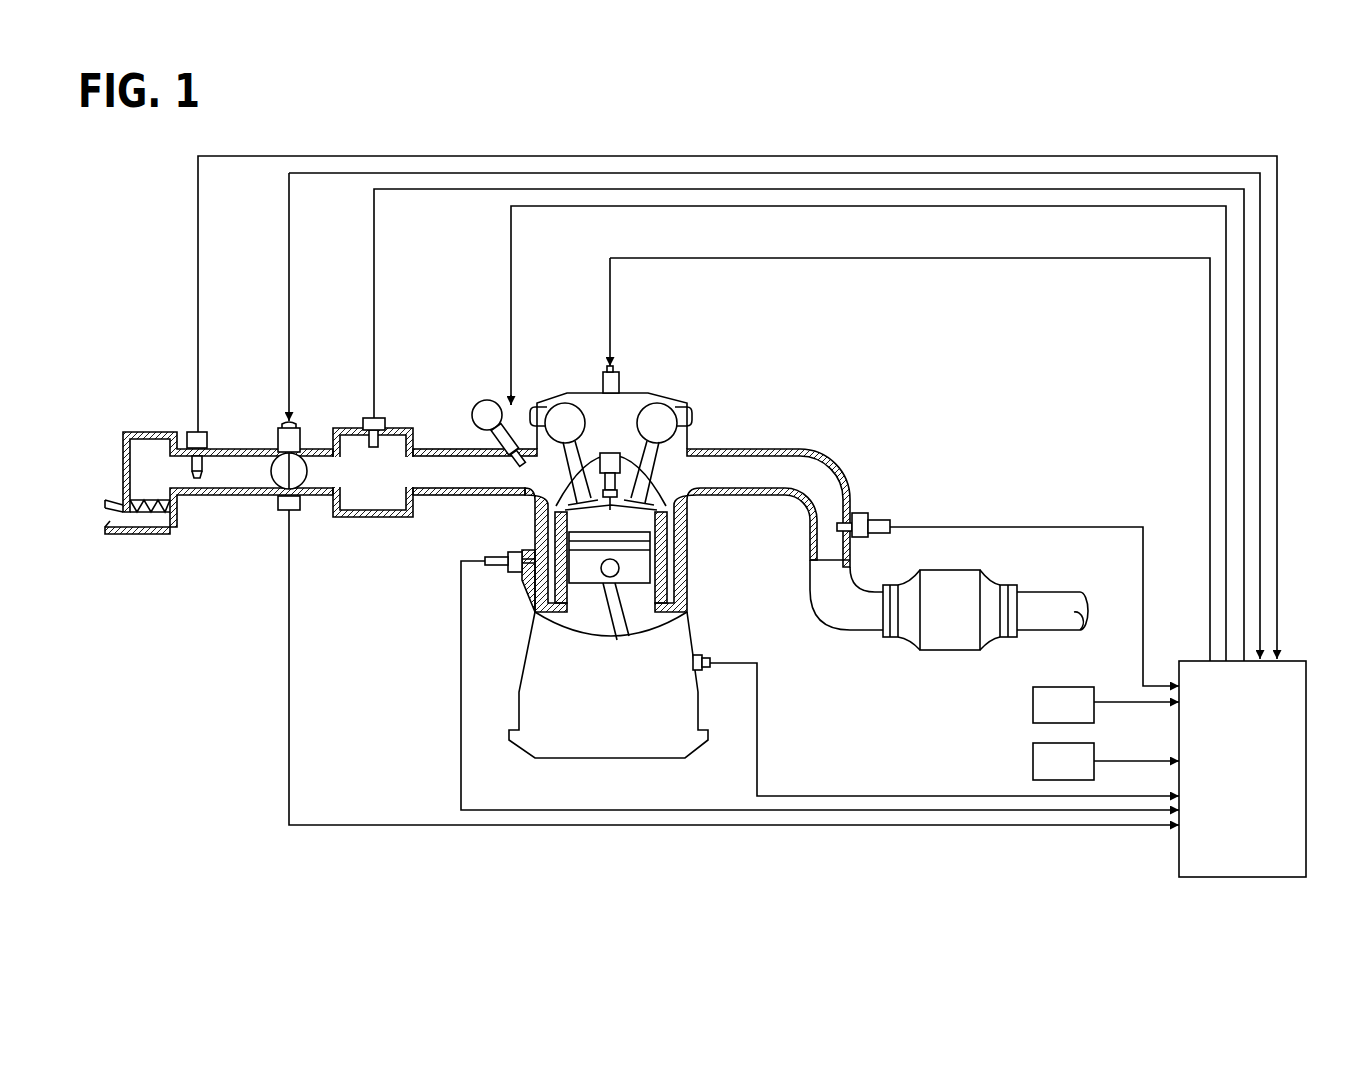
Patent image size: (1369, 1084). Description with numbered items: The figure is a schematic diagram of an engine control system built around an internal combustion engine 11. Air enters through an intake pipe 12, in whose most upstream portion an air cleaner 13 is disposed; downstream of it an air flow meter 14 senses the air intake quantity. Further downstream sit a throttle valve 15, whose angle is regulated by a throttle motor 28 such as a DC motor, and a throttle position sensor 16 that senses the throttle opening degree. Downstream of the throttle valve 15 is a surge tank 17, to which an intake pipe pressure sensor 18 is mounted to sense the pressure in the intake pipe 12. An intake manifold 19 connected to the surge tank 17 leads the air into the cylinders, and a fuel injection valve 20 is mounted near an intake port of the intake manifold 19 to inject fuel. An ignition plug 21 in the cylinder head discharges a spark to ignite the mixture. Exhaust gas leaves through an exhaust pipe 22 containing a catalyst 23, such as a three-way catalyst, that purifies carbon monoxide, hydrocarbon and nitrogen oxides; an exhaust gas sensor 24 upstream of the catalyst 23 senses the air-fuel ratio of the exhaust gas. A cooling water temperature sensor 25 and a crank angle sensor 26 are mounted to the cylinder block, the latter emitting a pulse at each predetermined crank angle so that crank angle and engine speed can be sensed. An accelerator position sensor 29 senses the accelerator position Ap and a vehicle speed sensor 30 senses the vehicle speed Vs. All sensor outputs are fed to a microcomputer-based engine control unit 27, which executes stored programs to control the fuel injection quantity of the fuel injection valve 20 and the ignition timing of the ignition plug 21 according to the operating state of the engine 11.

The internal combustion engine 11 is at (663, 398).
The intake pipe 12 is at (242, 449).
The air cleaner 13 is at (158, 515).
The air flow meter 14 is at (190, 431).
The throttle valve 15 is at (303, 478).
The throttle position sensor 16 is at (282, 512).
The surge tank 17 is at (357, 427).
The intake pipe pressure sensor 18 is at (380, 417).
The intake manifold 19 is at (440, 448).
The fuel injection valve 20 is at (478, 408).
The ignition plug 21 is at (618, 393).
The exhaust pipe 22 is at (798, 449).
The catalyst 23 is at (962, 571).
The exhaust gas sensor 24 is at (862, 512).
The cooling water temperature sensor 25 is at (510, 580).
The crank angle sensor 26 is at (708, 655).
The engine control unit 27 is at (1179, 855).
The throttle motor 28 is at (322, 424).
The accelerator position sensor 29 is at (1033, 705).
The vehicle speed sensor 30 is at (1033, 763).